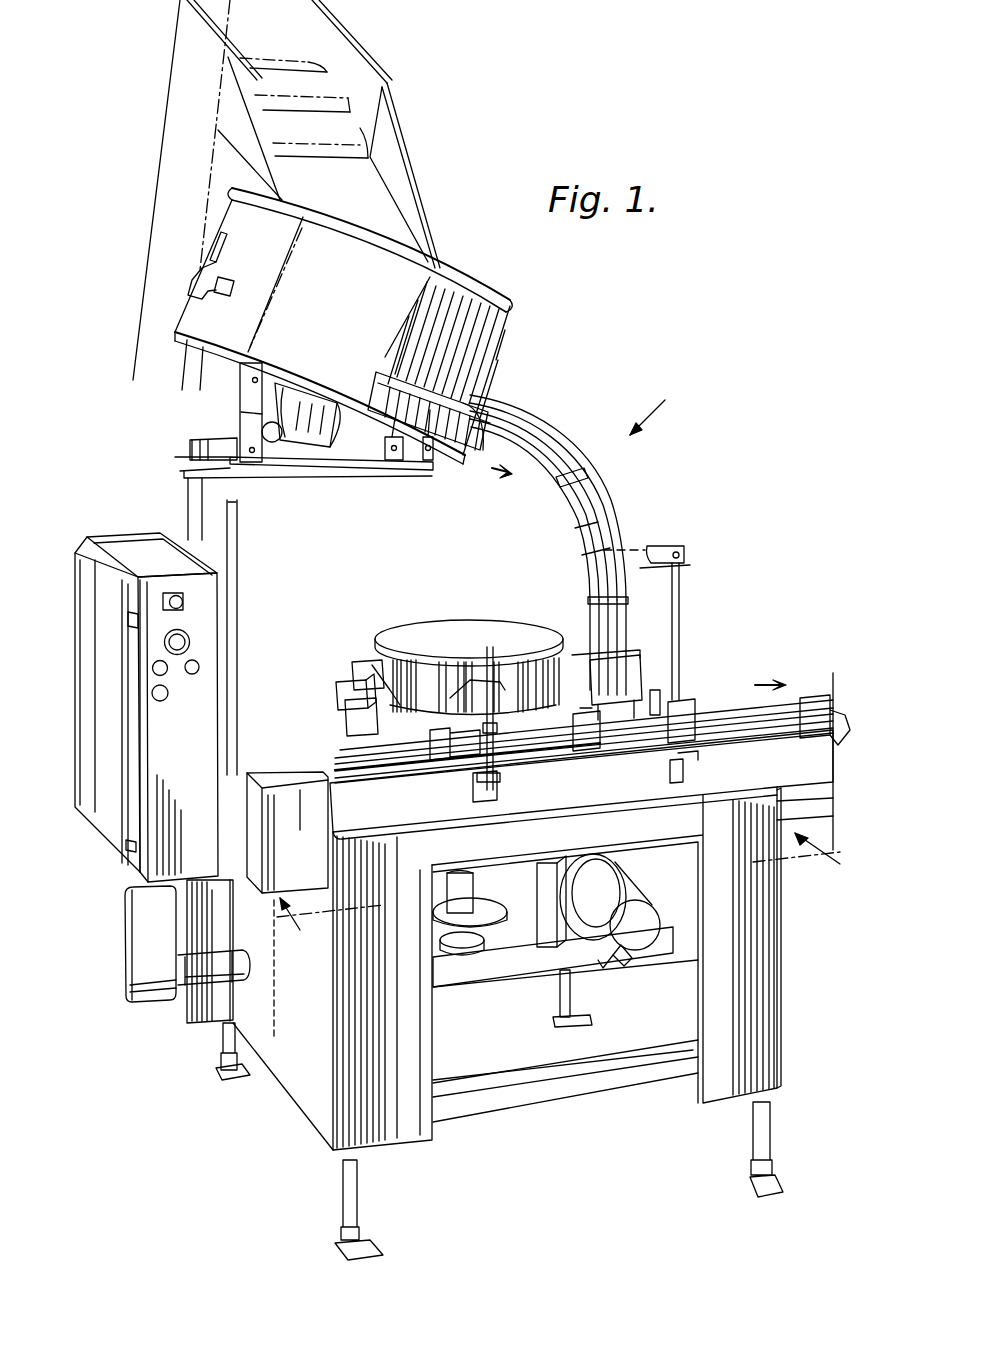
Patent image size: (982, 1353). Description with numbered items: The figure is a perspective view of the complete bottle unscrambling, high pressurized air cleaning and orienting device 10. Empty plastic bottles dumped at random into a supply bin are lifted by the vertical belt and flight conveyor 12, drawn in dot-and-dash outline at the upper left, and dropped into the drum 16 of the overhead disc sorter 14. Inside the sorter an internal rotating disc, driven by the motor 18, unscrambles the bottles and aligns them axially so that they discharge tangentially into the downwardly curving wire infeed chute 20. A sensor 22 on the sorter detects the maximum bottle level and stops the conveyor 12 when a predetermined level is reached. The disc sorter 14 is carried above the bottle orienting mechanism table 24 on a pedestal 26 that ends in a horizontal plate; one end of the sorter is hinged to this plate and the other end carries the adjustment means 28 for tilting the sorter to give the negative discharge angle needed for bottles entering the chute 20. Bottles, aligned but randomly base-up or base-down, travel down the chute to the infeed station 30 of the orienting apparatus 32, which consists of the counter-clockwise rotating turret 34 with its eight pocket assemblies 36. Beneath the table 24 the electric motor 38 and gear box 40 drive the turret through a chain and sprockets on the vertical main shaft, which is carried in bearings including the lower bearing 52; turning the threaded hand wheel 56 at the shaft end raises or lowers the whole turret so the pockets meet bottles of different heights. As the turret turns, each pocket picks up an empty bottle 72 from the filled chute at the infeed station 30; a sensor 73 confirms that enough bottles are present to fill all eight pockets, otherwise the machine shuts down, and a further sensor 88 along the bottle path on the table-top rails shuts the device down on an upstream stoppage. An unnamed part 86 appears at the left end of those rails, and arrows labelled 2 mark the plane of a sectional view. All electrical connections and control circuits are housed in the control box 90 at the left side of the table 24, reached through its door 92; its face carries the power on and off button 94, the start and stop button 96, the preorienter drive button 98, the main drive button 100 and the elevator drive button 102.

The section line 2- 2 is at (558, 866).
The bottle unscrambling, high pressurized air cleaning and orienting device 10 is at (663, 410).
The vertical belt and flight conveyor 12 is at (360, 62).
The overhead disc sorter 14 is at (485, 310).
The drum 16 is at (500, 345).
The motor 18 is at (333, 448).
The wire infeed chute 20 is at (552, 500).
The sensor 22 is at (188, 282).
The bottle orienting mechanism table 24 is at (770, 982).
The pedestal 26 is at (182, 492).
The adjustment means 28 is at (245, 405).
The infeed station 30 is at (625, 668).
The orienting apparatus 32 is at (432, 618).
The turret 34 is at (477, 627).
The pocket assemblies 36 is at (365, 695).
The electric motor 38 is at (630, 905).
The gear box 40 is at (540, 880).
The lower bearing 52 is at (478, 950).
The threaded hand wheel 56 is at (460, 950).
The empty bottle 72 is at (332, 718).
The sensor 73 is at (665, 548).
The conveyor guide rails 86 is at (350, 770).
The sensor 88 is at (832, 722).
The control box 90 is at (120, 548).
The door 92 is at (88, 615).
The power on and off button 94 is at (182, 600).
The start and stop button 96 is at (185, 644).
The preorienter drive button 98 is at (152, 668).
The main drive button 100 is at (196, 674).
The elevator drive button 102 is at (150, 700).